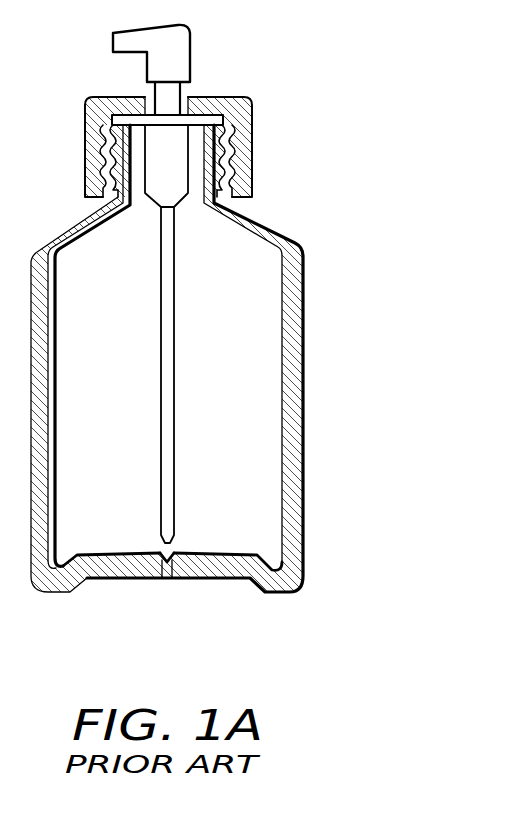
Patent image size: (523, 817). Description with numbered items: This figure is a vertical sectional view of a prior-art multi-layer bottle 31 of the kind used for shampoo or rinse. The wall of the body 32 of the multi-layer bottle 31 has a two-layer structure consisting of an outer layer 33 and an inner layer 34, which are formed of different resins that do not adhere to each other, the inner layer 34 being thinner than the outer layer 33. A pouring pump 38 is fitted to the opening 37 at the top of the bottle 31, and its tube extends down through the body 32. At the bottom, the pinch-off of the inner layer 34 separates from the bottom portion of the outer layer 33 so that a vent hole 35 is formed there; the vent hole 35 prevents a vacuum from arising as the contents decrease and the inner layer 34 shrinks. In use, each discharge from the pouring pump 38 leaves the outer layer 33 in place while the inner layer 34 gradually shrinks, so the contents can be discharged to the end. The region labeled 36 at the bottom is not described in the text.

The multi-layer bottle 31 is at (270, 90).
The body 32 is at (215, 390).
The outer layer 33 is at (294, 372).
The inner layer 34 is at (283, 425).
The vent hole 35 is at (167, 578).
The container bottom 36 is at (232, 567).
The opening 37 is at (233, 192).
The pouring pump 38 is at (191, 56).